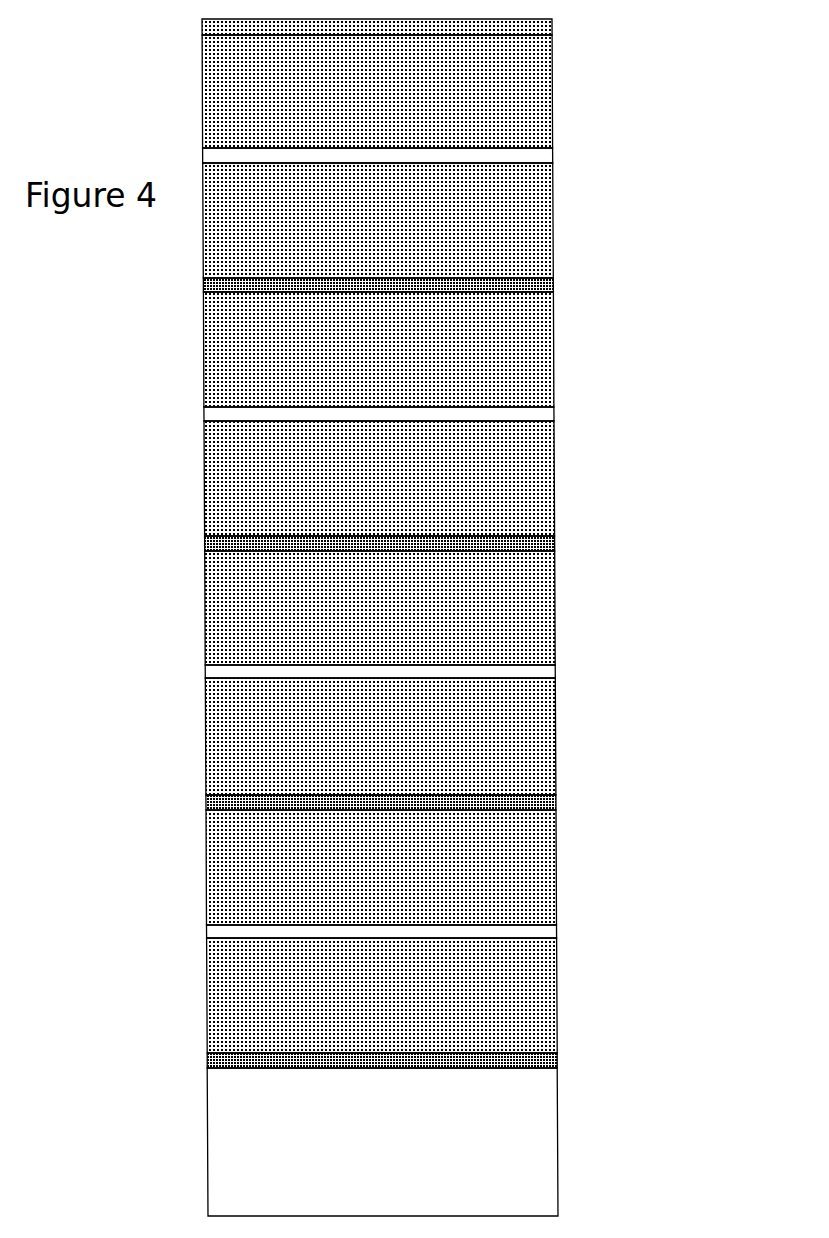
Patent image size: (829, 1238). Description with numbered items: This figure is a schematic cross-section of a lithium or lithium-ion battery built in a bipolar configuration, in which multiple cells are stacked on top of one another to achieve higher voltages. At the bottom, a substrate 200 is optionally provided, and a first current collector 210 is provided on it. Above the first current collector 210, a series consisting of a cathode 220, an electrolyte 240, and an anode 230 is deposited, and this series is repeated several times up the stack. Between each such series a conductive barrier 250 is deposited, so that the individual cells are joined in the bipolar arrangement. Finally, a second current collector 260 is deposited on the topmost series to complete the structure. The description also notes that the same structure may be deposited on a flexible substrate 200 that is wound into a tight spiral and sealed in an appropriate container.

The substrate 200 is at (382, 1142).
The first current collector 210 is at (576, 1056).
The cathode 220 is at (380, 608).
The anode 230 is at (379, 480).
The electrolyte 240 is at (564, 912).
The conductive barrier 250 is at (193, 782).
The second current collector 260 is at (567, 35).